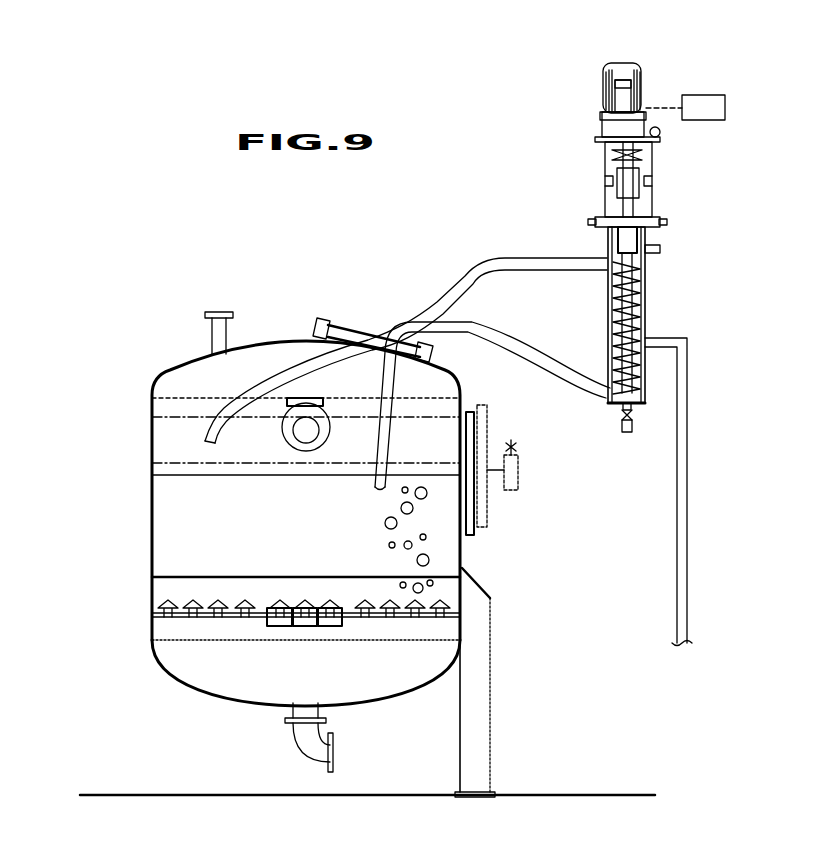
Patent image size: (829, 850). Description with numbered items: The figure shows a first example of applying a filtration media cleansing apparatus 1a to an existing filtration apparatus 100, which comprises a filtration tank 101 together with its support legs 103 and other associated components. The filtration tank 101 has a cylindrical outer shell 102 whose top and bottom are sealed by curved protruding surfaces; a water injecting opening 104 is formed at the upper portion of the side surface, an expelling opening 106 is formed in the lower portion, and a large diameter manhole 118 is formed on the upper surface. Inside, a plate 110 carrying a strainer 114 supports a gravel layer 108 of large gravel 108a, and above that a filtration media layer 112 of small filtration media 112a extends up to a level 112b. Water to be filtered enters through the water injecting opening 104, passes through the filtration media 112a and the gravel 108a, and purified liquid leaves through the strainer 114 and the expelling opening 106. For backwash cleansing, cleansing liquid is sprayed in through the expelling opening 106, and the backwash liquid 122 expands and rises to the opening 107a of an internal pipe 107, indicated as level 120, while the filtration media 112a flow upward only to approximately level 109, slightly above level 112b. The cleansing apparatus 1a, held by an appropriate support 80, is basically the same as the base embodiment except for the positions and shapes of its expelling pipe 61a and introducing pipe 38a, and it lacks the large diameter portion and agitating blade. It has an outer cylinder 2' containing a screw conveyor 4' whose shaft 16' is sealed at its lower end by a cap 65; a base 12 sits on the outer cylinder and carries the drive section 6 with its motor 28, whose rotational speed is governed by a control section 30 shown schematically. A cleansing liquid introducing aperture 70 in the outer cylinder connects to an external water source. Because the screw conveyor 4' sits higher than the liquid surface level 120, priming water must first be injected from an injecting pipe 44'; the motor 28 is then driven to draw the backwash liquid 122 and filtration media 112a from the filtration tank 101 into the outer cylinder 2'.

The filtration apparatus 100 is at (250, 256).
The filtration tank 101 is at (207, 353).
The outer shell 102 is at (152, 383).
The support legs 103 is at (480, 690).
The water injecting opening 104 is at (313, 428).
The expelling opening 106 is at (293, 722).
The internal pipe 107 is at (281, 416).
The opening of internal pipe 107a is at (300, 398).
The gravel layer 108 is at (165, 586).
The gravel 108a is at (434, 587).
The level 109 is at (397, 463).
The plate 110 is at (432, 618).
The filtration media layer 112 is at (167, 498).
The filtration media 112a is at (427, 538).
The level 112b is at (175, 470).
The strainer 114 is at (160, 616).
The manhole 118 is at (340, 322).
The level 120 is at (175, 398).
The backwash liquid 122 is at (190, 426).
The cleansing apparatus 1a is at (661, 76).
The motor 28 is at (601, 95).
The control section 30 is at (706, 100).
The drive section 6 is at (590, 108).
The base 12 is at (656, 163).
The cleansing liquid introducing aperture 70 is at (656, 248).
The screw conveyor 4' is at (667, 310).
The outer cylinder 2' is at (673, 315).
The shaft 16' is at (674, 340).
The cap 65 is at (621, 410).
The injecting pipe 44' is at (630, 460).
The support 80 is at (693, 492).
The expelling pipe 61a is at (527, 258).
The introducing pipe 38a is at (540, 376).